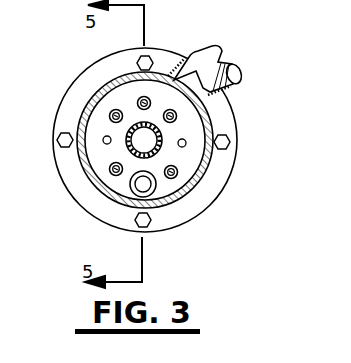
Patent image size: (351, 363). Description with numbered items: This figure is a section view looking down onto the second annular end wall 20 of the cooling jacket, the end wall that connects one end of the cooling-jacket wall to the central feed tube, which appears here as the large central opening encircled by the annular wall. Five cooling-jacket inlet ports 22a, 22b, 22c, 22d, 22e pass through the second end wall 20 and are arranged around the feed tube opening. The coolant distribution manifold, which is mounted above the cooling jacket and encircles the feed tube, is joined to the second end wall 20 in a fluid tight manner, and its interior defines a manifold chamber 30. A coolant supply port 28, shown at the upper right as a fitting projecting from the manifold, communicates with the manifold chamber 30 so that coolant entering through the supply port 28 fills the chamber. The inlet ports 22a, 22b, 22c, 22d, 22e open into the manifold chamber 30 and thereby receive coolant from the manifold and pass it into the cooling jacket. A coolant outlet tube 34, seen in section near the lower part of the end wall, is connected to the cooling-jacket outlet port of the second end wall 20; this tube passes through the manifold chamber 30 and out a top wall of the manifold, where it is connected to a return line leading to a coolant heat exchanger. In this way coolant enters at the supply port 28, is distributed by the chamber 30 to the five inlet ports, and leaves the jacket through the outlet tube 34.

The second annular end wall 20 is at (97, 127).
The cooling-jacket inlet port 22a is at (110, 170).
The cooling-jacket inlet port 22b is at (110, 111).
The cooling-jacket inlet port 22c is at (147, 98).
The cooling-jacket inlet port 22d is at (176, 117).
The cooling-jacket inlet port 22e is at (177, 172).
The coolant supply port 28 is at (242, 83).
The manifold chamber 30 is at (118, 183).
The coolant outlet tube 34 is at (143, 185).